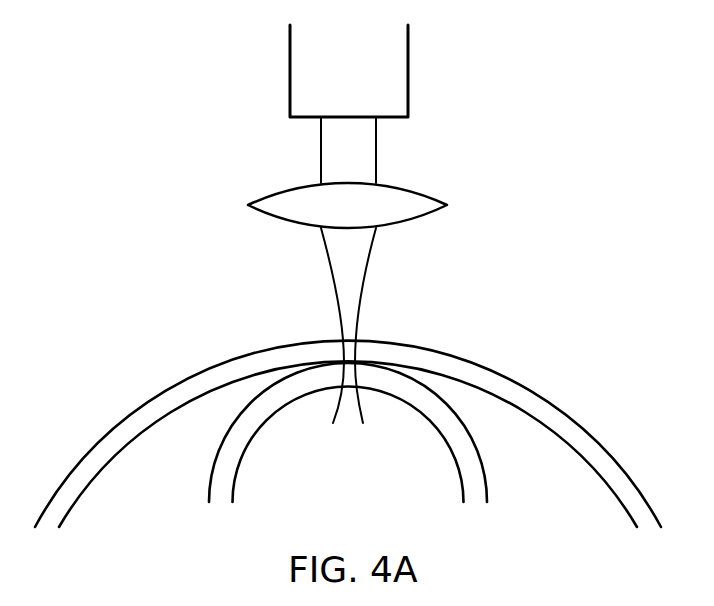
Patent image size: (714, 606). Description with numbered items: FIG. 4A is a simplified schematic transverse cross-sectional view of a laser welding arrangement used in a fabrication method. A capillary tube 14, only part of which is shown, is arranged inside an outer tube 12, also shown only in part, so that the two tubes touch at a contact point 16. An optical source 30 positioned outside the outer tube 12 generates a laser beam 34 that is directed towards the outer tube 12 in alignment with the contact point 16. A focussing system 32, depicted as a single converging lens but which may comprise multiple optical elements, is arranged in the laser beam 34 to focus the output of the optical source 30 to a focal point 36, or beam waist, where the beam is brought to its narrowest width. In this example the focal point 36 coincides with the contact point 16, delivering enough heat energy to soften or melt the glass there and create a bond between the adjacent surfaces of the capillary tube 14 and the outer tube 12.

The optical source 30 is at (367, 80).
The laser beam 34 is at (321, 163).
The focussing system 32 is at (447, 205).
The focal point 36 is at (360, 362).
The contact point 16 is at (347, 358).
The outer tube 12 is at (525, 400).
The capillary tube 14 is at (460, 473).